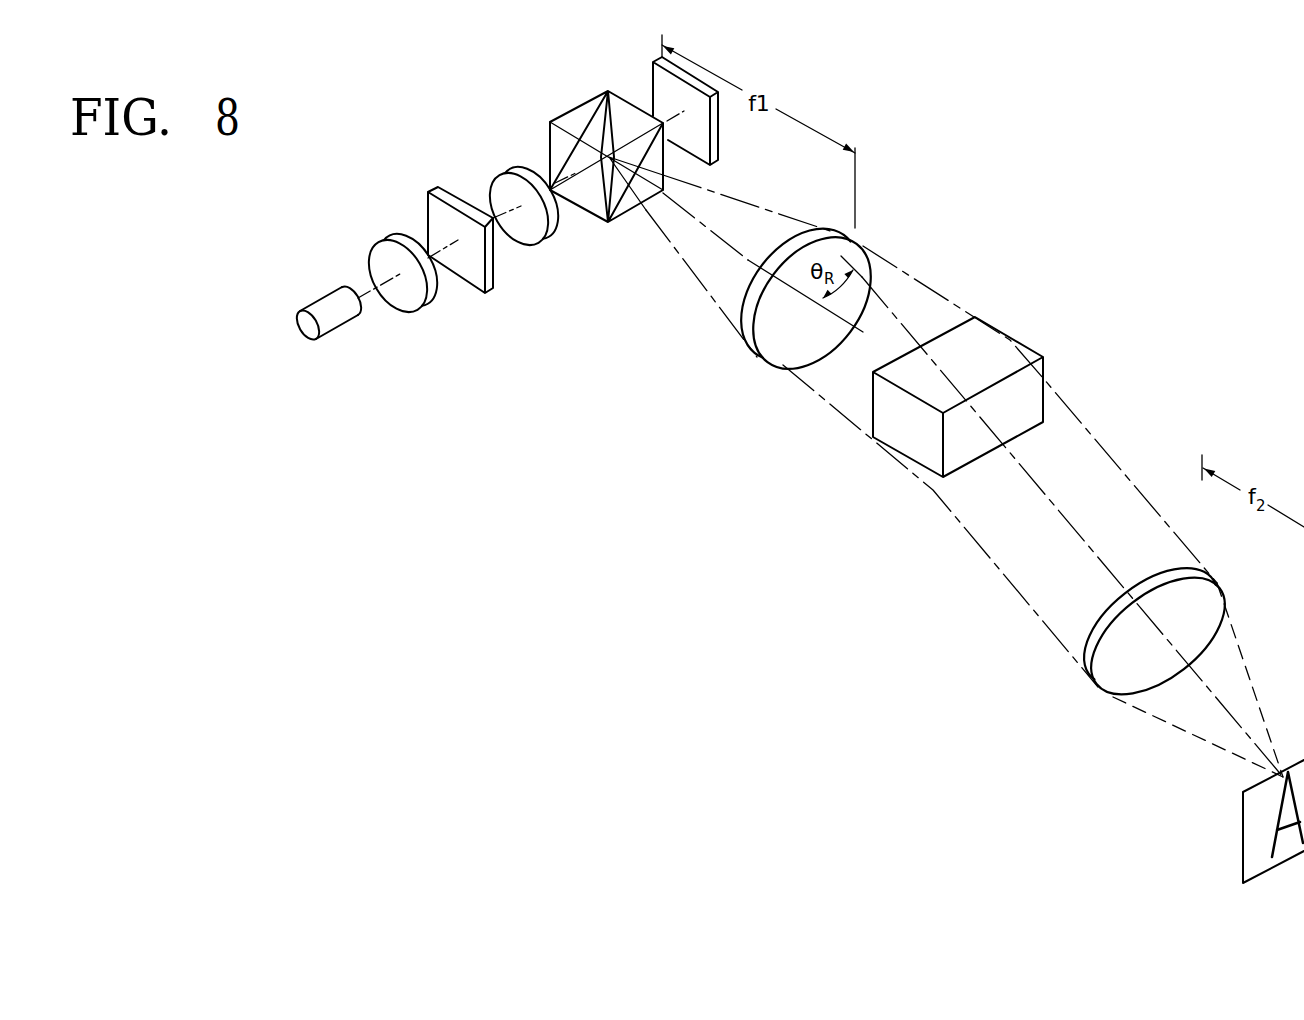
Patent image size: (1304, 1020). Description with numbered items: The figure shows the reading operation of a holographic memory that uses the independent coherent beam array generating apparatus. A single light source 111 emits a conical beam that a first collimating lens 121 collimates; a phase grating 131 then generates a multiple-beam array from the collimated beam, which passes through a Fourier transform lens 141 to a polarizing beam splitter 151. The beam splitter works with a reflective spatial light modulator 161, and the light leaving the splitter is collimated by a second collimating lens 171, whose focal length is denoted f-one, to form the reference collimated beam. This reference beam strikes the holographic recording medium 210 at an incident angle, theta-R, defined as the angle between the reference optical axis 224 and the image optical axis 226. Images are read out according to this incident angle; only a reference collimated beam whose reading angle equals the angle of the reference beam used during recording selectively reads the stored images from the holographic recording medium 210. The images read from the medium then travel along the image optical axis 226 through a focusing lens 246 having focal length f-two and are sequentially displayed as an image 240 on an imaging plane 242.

The light source 111 is at (325, 296).
The first collimating lens 121 is at (386, 236).
The phase grating 131 is at (438, 190).
The Fourier transform lens 141 is at (508, 167).
The polarizing beam splitter 151 is at (577, 105).
The reflective spatial light modulator 161 is at (655, 80).
The second collimating lens 171 is at (778, 344).
The holographic recording medium 210 is at (913, 442).
The reference optical axis 224 is at (858, 337).
The image optical axis 226 is at (1067, 527).
The image 240 is at (1262, 848).
The imaging plane 242 is at (1242, 808).
The focusing lens 246 is at (1110, 673).